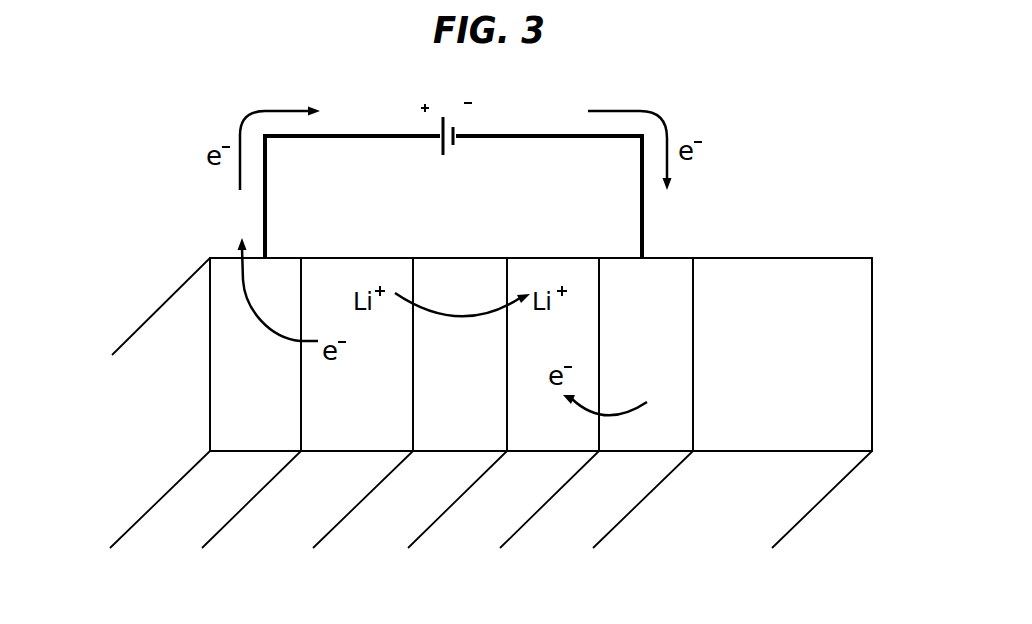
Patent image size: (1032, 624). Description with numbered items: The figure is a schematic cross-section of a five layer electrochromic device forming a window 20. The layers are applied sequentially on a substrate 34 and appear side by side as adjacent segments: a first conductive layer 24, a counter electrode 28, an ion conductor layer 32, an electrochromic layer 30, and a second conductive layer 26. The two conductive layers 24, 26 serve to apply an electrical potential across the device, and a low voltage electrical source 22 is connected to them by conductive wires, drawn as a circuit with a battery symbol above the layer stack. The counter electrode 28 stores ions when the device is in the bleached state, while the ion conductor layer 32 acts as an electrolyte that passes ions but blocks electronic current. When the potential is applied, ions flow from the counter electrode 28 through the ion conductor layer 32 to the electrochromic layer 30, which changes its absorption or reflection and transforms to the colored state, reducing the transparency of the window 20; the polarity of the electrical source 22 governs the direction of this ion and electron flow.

The window 20 is at (833, 162).
The low voltage electrical source 22 is at (414, 96).
The conductive layer 24 is at (251, 420).
The conductive layer 26 is at (686, 420).
The counter electrode 28 is at (343, 420).
The electrochromic layer 30 is at (543, 420).
The ion conductor layer 32 is at (451, 420).
The substrate 34 is at (800, 420).